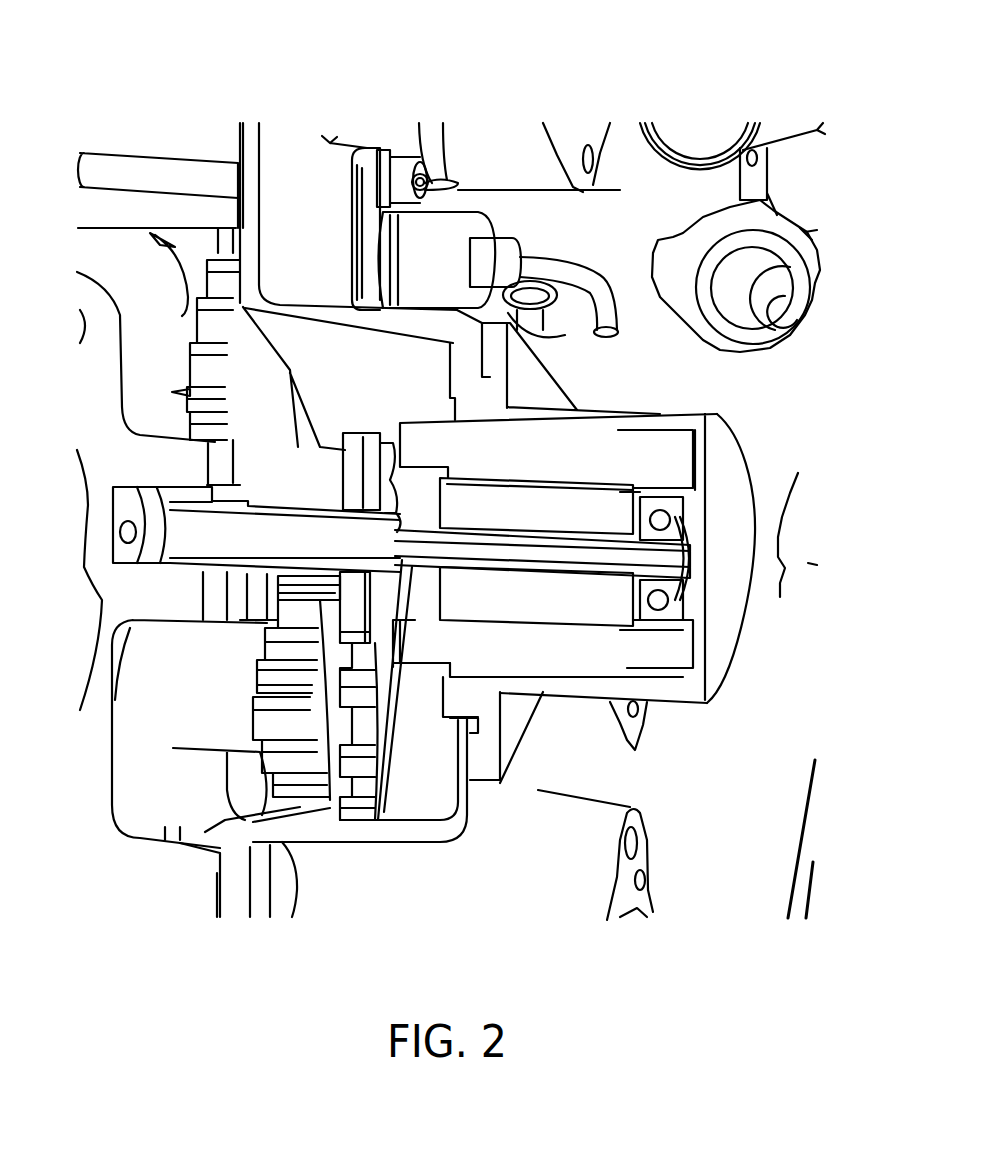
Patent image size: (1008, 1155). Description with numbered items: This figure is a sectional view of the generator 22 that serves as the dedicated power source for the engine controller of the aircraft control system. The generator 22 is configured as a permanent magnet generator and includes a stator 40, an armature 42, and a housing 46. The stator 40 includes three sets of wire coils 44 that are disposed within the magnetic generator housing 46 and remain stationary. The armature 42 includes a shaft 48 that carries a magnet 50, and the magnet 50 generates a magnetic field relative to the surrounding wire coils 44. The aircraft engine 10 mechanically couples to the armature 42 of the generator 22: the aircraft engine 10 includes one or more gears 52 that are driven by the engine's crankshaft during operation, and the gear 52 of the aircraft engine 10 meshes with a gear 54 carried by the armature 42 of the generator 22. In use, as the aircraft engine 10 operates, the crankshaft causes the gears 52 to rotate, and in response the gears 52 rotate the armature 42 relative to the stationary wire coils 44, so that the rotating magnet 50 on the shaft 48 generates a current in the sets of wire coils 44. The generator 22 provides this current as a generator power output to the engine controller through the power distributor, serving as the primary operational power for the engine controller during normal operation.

The aircraft engine 10 is at (610, 98).
The generator 22 is at (735, 433).
The stator 40 is at (653, 432).
The armature 42 is at (652, 557).
The wire coils 44 is at (600, 663).
The housing 46 is at (747, 470).
The shaft 48 is at (165, 561).
The magnet 50 is at (560, 505).
The gears 52 is at (358, 820).
The gear 54 is at (350, 432).